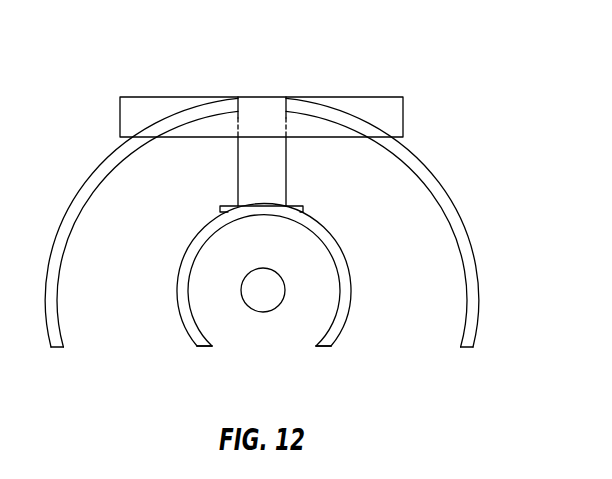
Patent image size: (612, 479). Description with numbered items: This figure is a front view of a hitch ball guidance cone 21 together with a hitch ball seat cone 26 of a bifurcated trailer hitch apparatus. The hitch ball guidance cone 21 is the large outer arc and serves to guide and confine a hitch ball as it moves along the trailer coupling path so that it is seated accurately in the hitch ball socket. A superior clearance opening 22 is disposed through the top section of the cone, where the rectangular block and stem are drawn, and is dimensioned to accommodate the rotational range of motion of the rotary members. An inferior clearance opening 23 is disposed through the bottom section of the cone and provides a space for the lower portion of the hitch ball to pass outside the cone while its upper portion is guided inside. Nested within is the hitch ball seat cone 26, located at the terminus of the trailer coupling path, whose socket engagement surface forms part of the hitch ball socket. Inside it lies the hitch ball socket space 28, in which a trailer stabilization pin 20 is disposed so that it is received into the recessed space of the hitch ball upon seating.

The trailer stabilization pin 20 is at (263, 291).
The hitch ball guidance cone 21 is at (474, 271).
The superior clearance opening 22 is at (262, 96).
The inferior clearance opening 23 is at (286, 321).
The hitch ball seat cone 26 is at (177, 299).
The hitch ball socket space 28 is at (262, 316).